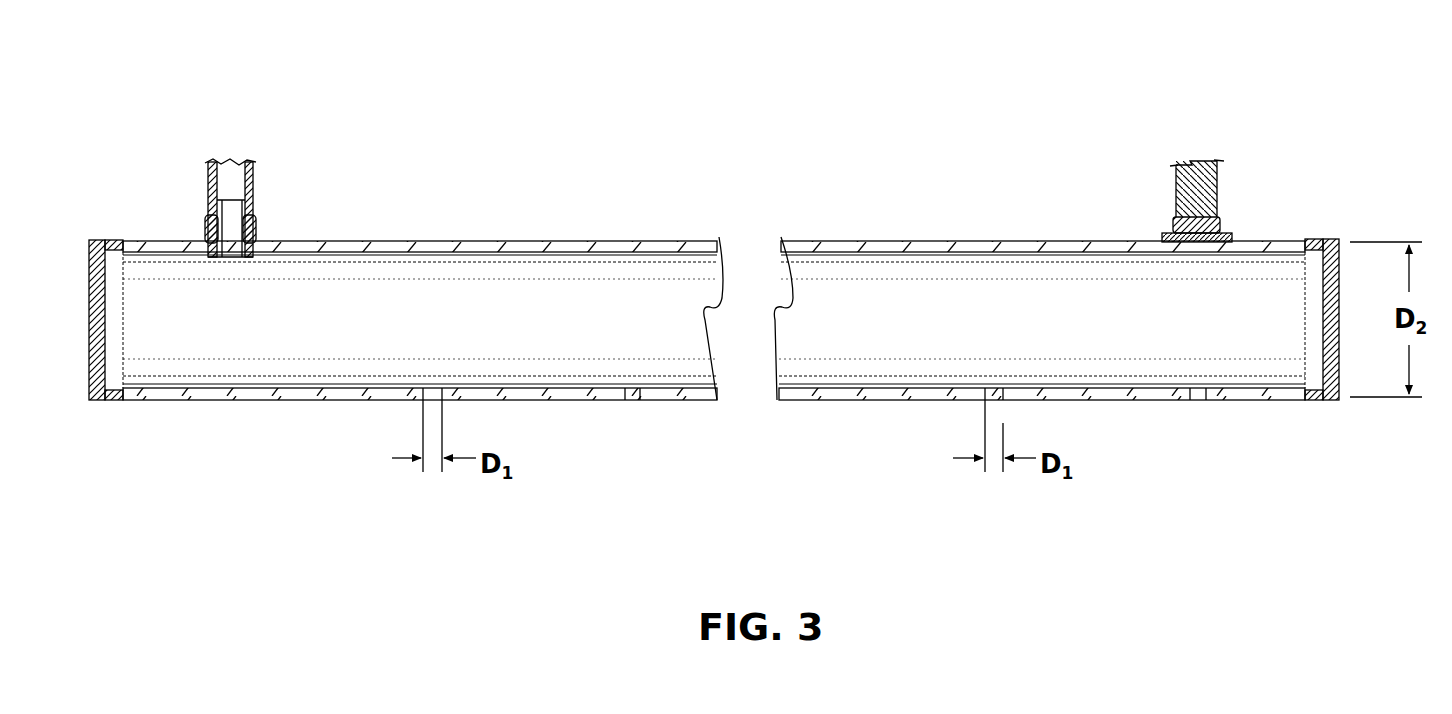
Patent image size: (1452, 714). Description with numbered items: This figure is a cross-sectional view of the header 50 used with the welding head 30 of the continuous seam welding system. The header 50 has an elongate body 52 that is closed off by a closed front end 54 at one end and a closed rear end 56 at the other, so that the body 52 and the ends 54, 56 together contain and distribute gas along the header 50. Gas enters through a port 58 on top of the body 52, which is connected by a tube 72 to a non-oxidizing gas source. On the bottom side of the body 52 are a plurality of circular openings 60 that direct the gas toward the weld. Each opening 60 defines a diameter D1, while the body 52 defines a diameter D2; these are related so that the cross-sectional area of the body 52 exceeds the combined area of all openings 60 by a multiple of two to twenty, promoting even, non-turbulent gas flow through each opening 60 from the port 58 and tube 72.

The welding head 30 is at (1220, 195).
The header 50 is at (1099, 102).
The elongate body 52 is at (845, 240).
The closed front end 54 is at (1332, 401).
The closed rear end 56 is at (92, 401).
The port 58 is at (207, 233).
The openings 60 is at (230, 403).
The tube 72 is at (254, 171).